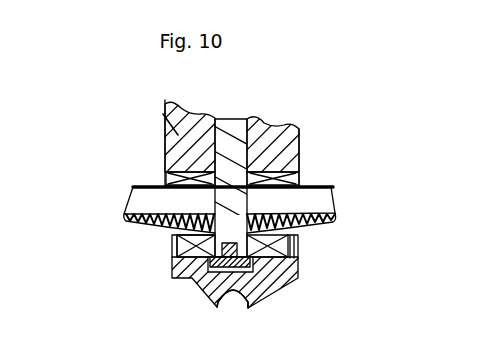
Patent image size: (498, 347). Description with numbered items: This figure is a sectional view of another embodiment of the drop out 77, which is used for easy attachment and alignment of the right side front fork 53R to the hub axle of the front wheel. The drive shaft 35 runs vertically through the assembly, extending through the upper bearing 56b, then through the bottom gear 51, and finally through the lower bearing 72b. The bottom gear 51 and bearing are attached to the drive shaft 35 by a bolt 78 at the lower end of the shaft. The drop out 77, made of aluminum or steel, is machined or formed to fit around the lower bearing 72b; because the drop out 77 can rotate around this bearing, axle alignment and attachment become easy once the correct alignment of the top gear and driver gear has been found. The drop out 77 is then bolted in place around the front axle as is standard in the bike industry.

The drive shaft 35 is at (228, 120).
The right side front fork 53R is at (164, 119).
The bottom gear 51 is at (142, 203).
The bearing 56b is at (300, 179).
The bearing 72b is at (283, 248).
The bolt 78 is at (197, 284).
The drop out 77 is at (272, 293).